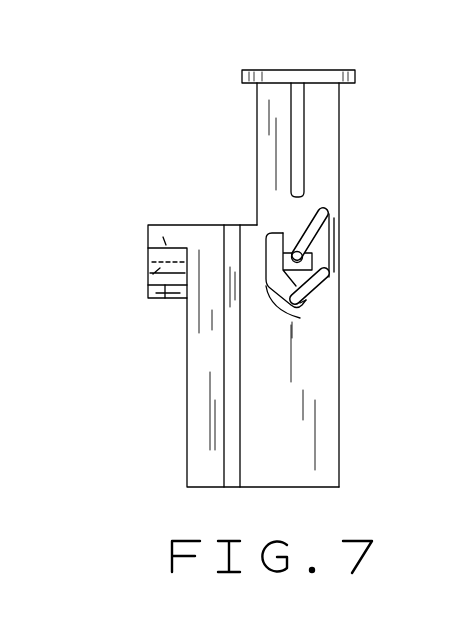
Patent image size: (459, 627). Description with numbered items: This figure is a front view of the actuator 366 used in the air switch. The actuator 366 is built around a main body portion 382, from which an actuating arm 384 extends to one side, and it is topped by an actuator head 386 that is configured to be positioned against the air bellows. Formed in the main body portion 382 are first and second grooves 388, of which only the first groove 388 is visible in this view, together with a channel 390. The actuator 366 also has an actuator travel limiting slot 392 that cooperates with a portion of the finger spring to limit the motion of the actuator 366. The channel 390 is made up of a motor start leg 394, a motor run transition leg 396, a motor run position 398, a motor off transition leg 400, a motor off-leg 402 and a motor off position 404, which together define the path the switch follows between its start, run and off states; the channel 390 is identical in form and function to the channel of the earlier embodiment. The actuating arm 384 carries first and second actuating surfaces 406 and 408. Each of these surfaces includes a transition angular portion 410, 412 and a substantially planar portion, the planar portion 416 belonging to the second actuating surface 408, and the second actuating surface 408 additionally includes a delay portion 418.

The actuator 366 is at (339, 159).
The main body portion 382 is at (304, 392).
The actuating arm 384 is at (133, 273).
The actuator head 386 is at (296, 70).
The first groove 388 is at (235, 400).
The channel 390 is at (334, 253).
The actuator travel limiting slot 392 is at (297, 130).
The motor start leg 394 is at (327, 274).
The motor run transition leg 396 is at (284, 234).
The motor run position 398 is at (352, 178).
The motor off transition leg 400 is at (290, 270).
The motor off-leg 402 is at (300, 318).
The motor off position 404 is at (300, 303).
The first actuating surface 406 is at (153, 276).
The second actuating surface 408 is at (165, 241).
The transition angular portion 410 is at (163, 300).
The transition angular portion 412 is at (150, 252).
The substantially planar portion 416 is at (165, 243).
The delay portion 418 is at (170, 286).